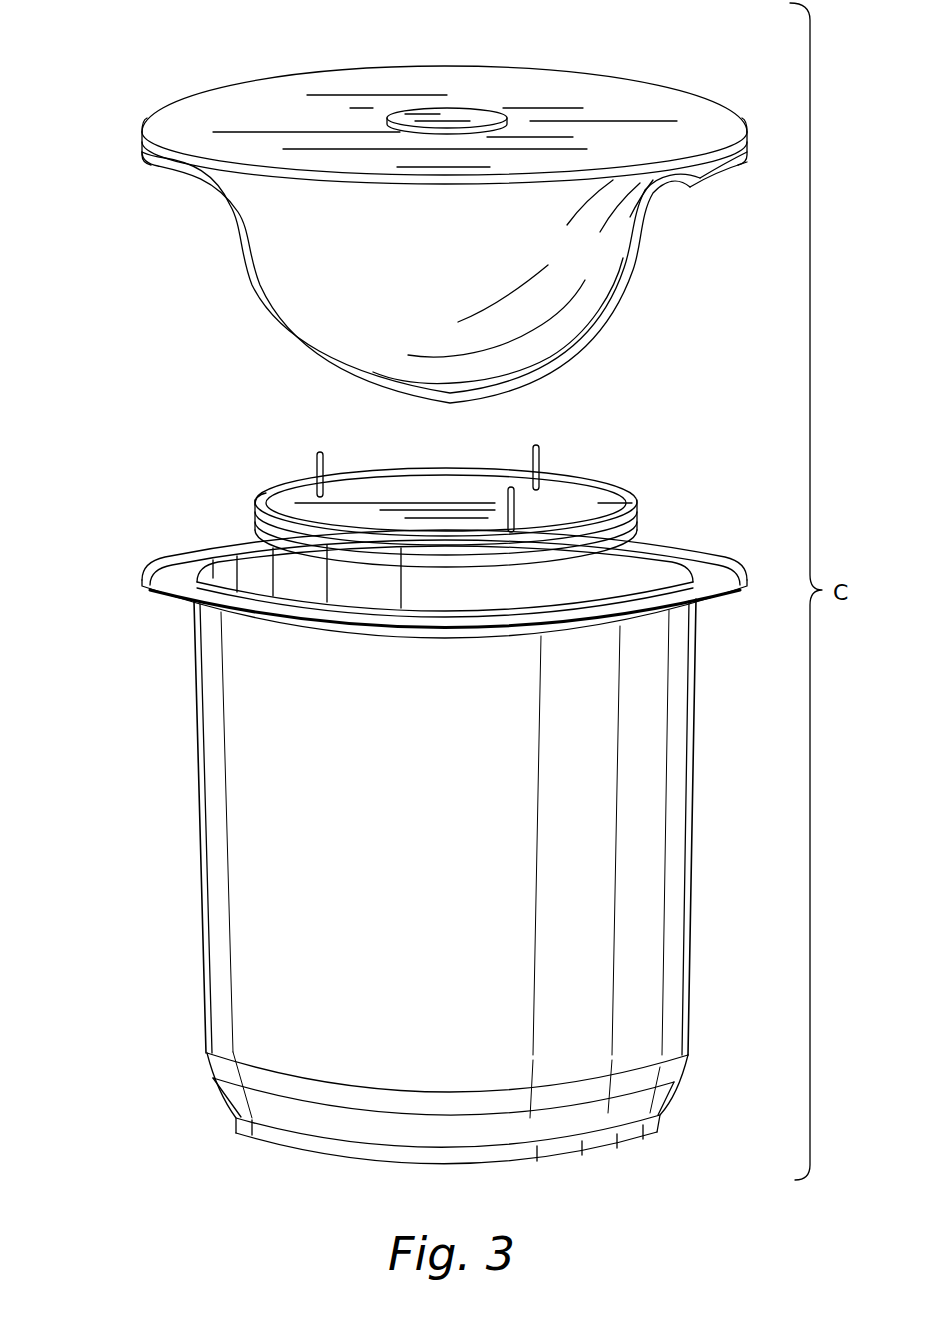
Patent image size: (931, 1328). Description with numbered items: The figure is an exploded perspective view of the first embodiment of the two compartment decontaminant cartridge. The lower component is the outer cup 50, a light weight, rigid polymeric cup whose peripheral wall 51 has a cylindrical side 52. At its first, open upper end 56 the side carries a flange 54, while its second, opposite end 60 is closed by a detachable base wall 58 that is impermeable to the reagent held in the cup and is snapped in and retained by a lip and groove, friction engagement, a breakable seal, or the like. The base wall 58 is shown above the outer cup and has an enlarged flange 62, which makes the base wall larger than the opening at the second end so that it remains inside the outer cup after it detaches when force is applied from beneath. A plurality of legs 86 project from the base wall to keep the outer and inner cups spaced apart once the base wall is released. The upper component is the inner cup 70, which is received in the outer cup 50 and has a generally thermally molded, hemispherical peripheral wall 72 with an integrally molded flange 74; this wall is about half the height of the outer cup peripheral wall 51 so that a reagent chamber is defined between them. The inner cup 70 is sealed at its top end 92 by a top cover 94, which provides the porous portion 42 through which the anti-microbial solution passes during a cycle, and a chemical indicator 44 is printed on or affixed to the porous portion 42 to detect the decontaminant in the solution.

The porous portion 42 is at (439, 201).
The chemical indicator 44 is at (449, 117).
The top cover 94 is at (690, 88).
The top end 92 is at (157, 120).
The flange 74 is at (723, 190).
The inner cup 70 is at (419, 277).
The inner cup peripheral wall 72 is at (617, 305).
The legs 86 is at (316, 463).
The enlarged flange 62 is at (262, 503).
The detachable base wall 58 is at (464, 489).
The open upper end 56 is at (258, 566).
The flange 54 is at (738, 590).
The outer cup 50 is at (441, 839).
The cylindrical side 52 is at (690, 857).
The peripheral wall 51 is at (205, 1054).
The second end 60 is at (255, 1165).